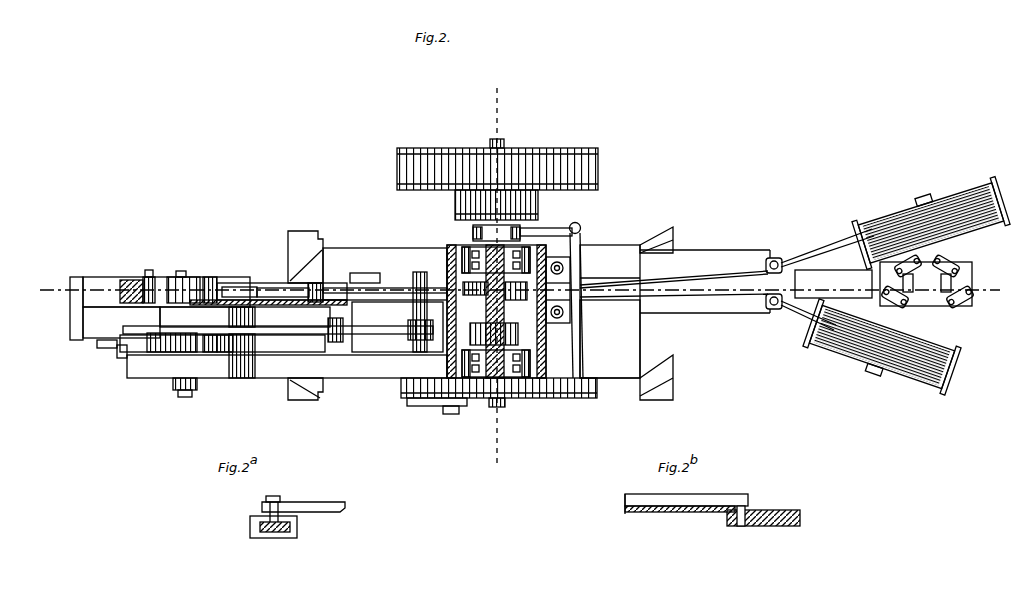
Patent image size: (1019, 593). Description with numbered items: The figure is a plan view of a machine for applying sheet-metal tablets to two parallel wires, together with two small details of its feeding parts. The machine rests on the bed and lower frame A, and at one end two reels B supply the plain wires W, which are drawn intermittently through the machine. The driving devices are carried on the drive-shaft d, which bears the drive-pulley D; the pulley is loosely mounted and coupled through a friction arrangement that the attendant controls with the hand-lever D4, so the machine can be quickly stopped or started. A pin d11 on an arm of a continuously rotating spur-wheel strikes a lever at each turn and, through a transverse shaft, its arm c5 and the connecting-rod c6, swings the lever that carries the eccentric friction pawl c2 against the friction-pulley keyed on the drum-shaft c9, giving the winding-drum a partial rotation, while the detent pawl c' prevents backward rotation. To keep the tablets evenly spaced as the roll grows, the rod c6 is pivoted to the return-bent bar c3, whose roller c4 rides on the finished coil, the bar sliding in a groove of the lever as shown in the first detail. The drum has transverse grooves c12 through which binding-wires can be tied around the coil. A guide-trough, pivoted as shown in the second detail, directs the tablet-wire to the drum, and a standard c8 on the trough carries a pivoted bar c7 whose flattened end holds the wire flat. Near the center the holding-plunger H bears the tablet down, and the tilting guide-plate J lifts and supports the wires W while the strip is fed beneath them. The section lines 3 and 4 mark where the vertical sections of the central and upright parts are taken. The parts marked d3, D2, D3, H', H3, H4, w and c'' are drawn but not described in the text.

In FIG. 2, the drive-pulley D is at (497, 264).
In FIG. 2, the drive-shaft d is at (499, 267).
In FIG. 2, the pinion d3 is at (507, 205).
In FIG. 2, the pin d11 is at (453, 409).
In FIG. 2, the clutch member D2 is at (517, 297).
In FIG. 2, the clutch gear D3 is at (502, 331).
In FIG. 2, the hand-lever D4 is at (583, 232).
In FIG. 2, the holding-plunger H is at (448, 313).
In FIG. 2B, the holding-plunger H is at (763, 510).
In FIG. 2, the standard H' is at (505, 304).
In FIG. 2, the bearing H3 is at (475, 300).
In FIG. 2, the frame extension H4 is at (610, 339).
In FIG. 2, the tilting guide-plate J is at (558, 290).
In FIG. 2, the bed and lower frame A is at (884, 281).
In FIG. 2, the reels or spools B is at (906, 286).
In FIG. 2, the wires W is at (827, 279).
In FIG. 2, the guide roller w is at (774, 260).
In FIG. 2, the detent pawl or clutch c' is at (175, 306).
In FIG. 2, the gear c'' is at (365, 278).
In FIG. 2, the eccentric friction pawl or clutch c2 is at (122, 366).
In FIG. 2, the return-bent bar c3 is at (168, 401).
In FIG. 2A, the return-bent bar c3 is at (276, 538).
In FIG. 2, the roller c4 is at (300, 316).
In FIG. 2, the arm c5 is at (418, 377).
In FIG. 2, the connecting-rod c6 is at (276, 287).
In FIG. 2A, the connecting-rod c6 is at (303, 499).
In FIG. 2B, the connecting-rod c6 is at (673, 503).
In FIG. 2, the bar c7 is at (296, 288).
In FIG. 2, the standard c8 is at (318, 279).
In FIG. 2, the drum-shaft c9 is at (184, 399).
In FIG. 2, the transverse grooves or slits c12 is at (172, 282).
In FIG. 2A, the transverse grooves or slits c12 is at (286, 526).
In FIG. 2, the section line 3 is at (519, 286).
In FIG. 2, the section line 4 is at (493, 278).